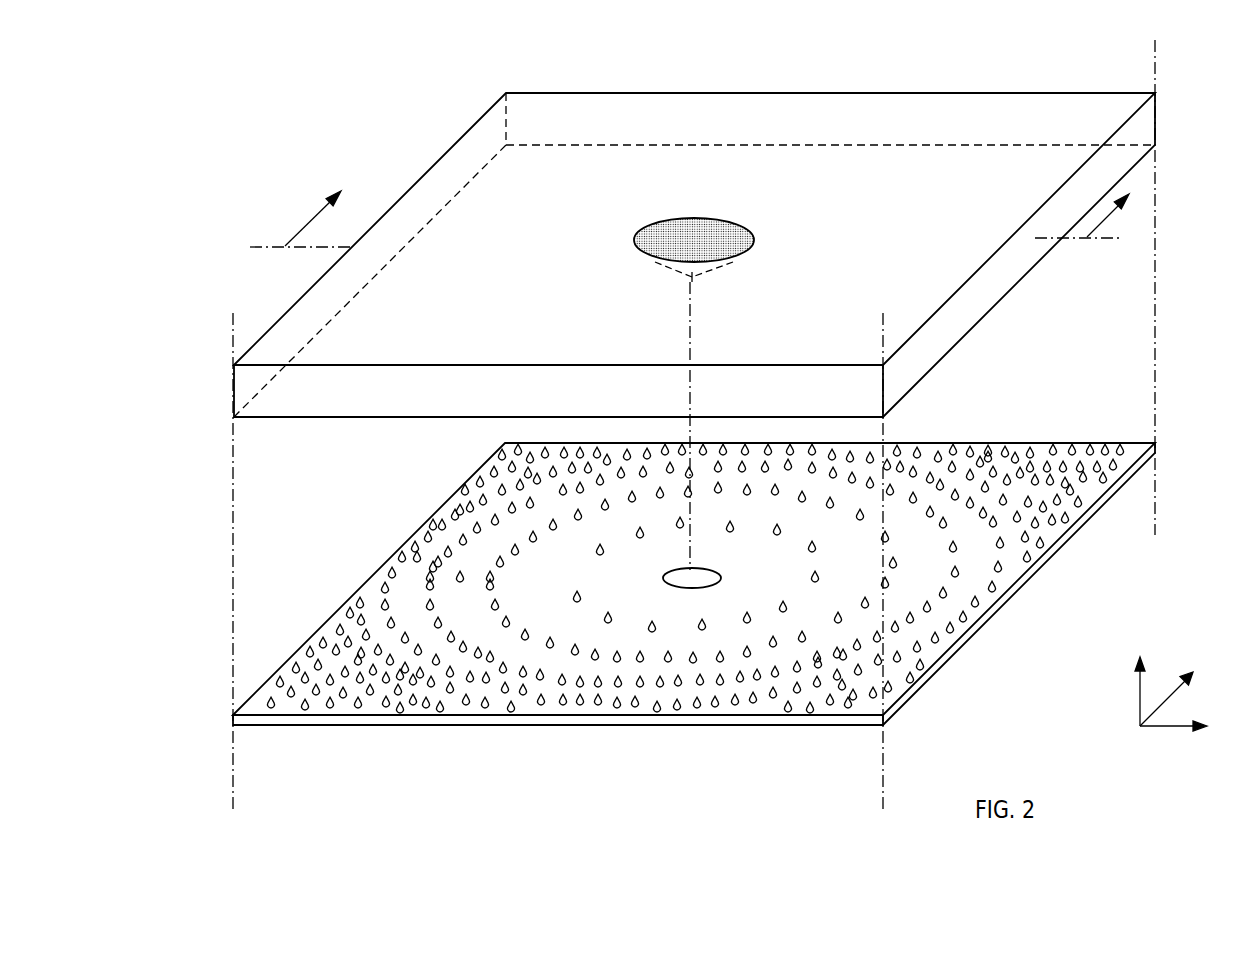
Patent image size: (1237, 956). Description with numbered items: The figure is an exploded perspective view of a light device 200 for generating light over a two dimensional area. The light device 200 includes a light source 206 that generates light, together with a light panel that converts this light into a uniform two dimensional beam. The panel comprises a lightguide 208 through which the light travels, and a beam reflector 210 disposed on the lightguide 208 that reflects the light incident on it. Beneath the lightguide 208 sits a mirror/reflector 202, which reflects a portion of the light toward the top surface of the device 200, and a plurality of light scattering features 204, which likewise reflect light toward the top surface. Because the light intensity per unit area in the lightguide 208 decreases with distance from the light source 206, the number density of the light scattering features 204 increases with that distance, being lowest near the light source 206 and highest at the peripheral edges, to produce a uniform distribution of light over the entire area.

The light device 200 is at (224, 69).
The mirror/reflector 202 is at (320, 727).
The light scattering features 204 is at (380, 567).
The light source 206 is at (670, 588).
The lightguide 208 is at (444, 161).
The beam reflector 210 is at (668, 240).